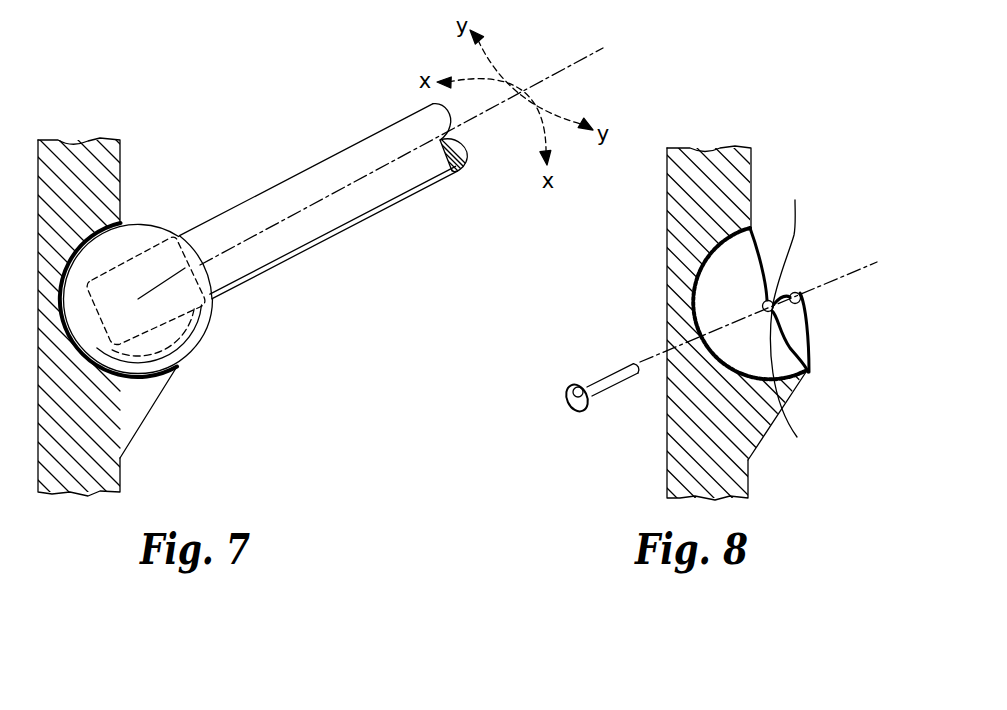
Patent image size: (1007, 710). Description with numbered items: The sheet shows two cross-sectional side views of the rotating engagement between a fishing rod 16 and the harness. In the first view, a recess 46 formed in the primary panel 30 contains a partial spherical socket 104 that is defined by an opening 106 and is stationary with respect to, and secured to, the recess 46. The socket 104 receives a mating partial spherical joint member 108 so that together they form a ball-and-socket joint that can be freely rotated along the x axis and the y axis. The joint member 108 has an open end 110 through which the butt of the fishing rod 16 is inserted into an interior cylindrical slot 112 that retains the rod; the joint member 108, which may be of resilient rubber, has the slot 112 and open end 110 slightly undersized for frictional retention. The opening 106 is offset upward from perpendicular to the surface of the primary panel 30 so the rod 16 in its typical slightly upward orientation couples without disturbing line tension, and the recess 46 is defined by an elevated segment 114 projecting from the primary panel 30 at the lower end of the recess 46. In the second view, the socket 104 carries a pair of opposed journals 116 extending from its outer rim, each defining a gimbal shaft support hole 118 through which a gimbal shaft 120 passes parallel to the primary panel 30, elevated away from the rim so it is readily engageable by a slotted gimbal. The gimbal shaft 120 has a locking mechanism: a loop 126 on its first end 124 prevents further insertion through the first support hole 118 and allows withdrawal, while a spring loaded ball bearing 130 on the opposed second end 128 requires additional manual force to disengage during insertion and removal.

In FIG. 7, the primary panel 30 is at (58, 158).
In FIG. 8, the primary panel 30 is at (710, 162).
In FIG. 7, the recess 46 is at (137, 373).
In FIG. 7, the fishing rod 16 is at (323, 241).
In FIG. 7, the partial spherical socket 104 is at (147, 374).
In FIG. 8, the partial spherical socket 104 is at (810, 362).
In FIG. 7, the opening 106 is at (143, 207).
In FIG. 7, the partial spherical joint member 108 is at (164, 224).
In FIG. 7, the open end 110 is at (218, 301).
In FIG. 7, the interior cylindrical slot 112 is at (183, 318).
In FIG. 7, the elevated segment 114 is at (184, 365).
In FIG. 8, the journals 116 is at (800, 290).
In FIG. 8, the gimbal shaft support hole 118 is at (801, 303).
In FIG. 8, the gimbal shaft 120 is at (603, 375).
In FIG. 8, the first end 124 is at (577, 412).
In FIG. 8, the loop 126 is at (566, 397).
In FIG. 8, the second end 128 is at (632, 385).
In FIG. 8, the spring loaded ball bearing 130 is at (636, 366).